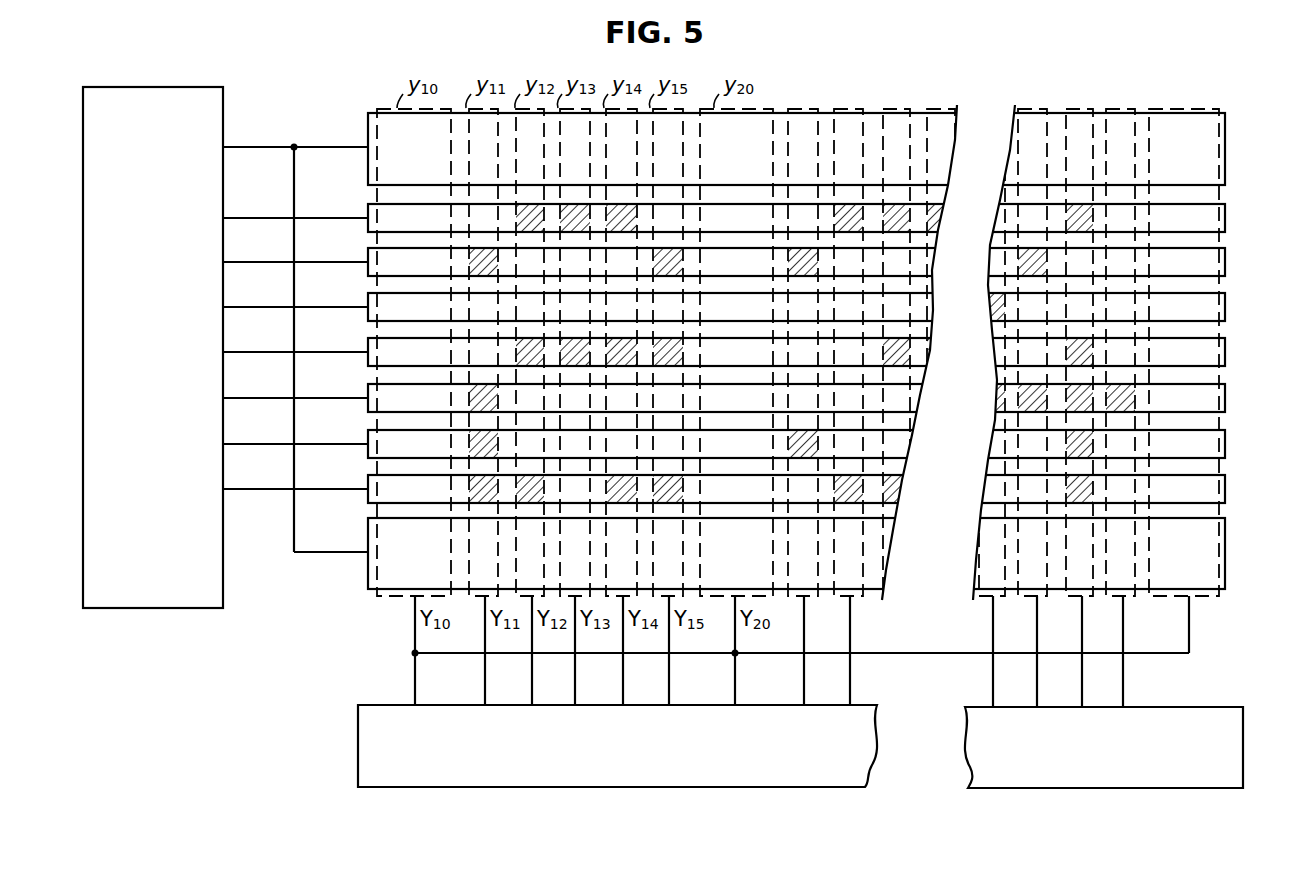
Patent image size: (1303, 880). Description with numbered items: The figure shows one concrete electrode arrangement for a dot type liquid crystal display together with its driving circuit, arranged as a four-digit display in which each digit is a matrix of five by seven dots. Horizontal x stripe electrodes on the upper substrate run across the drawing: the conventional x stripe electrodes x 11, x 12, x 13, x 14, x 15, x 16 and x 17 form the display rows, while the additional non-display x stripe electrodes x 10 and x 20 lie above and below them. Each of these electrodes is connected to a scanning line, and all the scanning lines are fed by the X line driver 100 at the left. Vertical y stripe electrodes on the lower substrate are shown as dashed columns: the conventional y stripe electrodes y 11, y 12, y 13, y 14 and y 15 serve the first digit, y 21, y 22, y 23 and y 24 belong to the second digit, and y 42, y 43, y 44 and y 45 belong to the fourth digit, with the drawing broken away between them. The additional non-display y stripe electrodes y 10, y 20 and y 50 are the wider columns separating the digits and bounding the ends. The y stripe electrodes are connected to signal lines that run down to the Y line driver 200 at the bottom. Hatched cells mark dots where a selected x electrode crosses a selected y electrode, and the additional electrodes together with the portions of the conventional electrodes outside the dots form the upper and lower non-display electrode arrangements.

The X line driver 100 is at (150, 87).
The Y line driver 200 is at (358, 768).
The additional x stripe electrode x10 / scanning line X10 and additional y stripe el 10 is at (1246, 158).
The x stripe electrode x11 / scanning line X11 and y stripe electrode y11 / signal l 11 is at (1246, 218).
The x stripe electrode x12 / scanning line X12 and y stripe electrode y12 / signal l 12 is at (1246, 276).
The x stripe electrode x13 / scanning line X13 and y stripe electrode y13 / signal l 13 is at (1246, 310).
The x stripe electrode x14 / scanning line X14 and y stripe electrode y14 / signal l 14 is at (1246, 358).
The x stripe electrode x15 / scanning line X15 and y stripe electrode y15 / signal l 15 is at (1246, 400).
The x stripe electrode x16 / scanning line X16 16 is at (1246, 438).
The x stripe electrode x17 / scanning line X17 17 is at (1246, 487).
The additional x stripe electrode x20 / scanning line X20 and additional y stripe el 20 is at (1246, 550).
The y stripe electrode y21 / signal line Y21 21 is at (789, 108).
The y stripe electrode y22 / signal line Y22 22 is at (834, 108).
The y stripe electrode y23 / signal line Y23 23 is at (883, 108).
The y stripe electrode y24 / signal line Y24 24 is at (928, 108).
The y stripe electrode y42 / signal line Y42 42 is at (1004, 408).
The y stripe electrode y43 / signal line Y43 43 is at (1017, 108).
The y stripe electrode y44 / signal line Y44 44 is at (1062, 108).
The y stripe electrode y45 / signal line Y45 45 is at (1105, 108).
The additional y stripe electrode y50 / signal line Y50 50 is at (1172, 108).